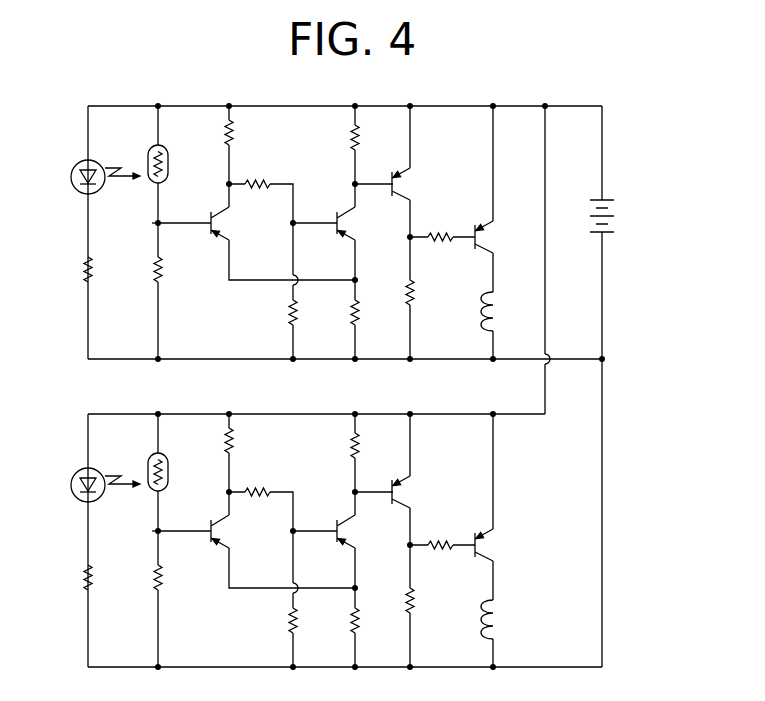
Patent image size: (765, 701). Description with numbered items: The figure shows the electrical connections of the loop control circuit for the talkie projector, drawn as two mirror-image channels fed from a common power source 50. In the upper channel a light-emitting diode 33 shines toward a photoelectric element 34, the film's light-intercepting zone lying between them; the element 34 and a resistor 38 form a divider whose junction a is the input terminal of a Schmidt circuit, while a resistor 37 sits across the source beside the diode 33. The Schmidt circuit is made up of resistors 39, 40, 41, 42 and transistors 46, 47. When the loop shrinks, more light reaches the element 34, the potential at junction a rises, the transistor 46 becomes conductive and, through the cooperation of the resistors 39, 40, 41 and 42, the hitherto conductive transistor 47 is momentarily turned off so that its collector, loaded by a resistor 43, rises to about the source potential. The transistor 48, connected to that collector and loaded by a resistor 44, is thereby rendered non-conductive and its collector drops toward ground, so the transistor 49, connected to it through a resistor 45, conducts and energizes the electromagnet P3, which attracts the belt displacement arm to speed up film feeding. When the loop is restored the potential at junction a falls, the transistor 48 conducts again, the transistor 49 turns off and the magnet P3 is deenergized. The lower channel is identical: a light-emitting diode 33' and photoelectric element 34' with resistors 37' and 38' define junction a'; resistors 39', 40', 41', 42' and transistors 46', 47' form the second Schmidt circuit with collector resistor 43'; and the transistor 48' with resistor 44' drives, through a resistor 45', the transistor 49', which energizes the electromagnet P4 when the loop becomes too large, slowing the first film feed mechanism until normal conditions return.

The light-emitting diode 33 is at (92, 158).
The photoelectric element 34 is at (173, 148).
The resistor 37 is at (58, 268).
The resistor 38 is at (184, 268).
The resistor 39 is at (254, 129).
The resistor 40 is at (271, 163).
The resistor 41 is at (267, 312).
The resistor 42 is at (332, 312).
The resistor 43 is at (329, 132).
The resistor 44 is at (435, 291).
The resistor 45 is at (456, 215).
The transistor 46 is at (245, 223).
The transistor 47 is at (371, 223).
The transistor 48 is at (424, 182).
The transistor 49 is at (504, 237).
The electromagnet P3 is at (486, 318).
The power source 50 is at (615, 210).
The junction a is at (140, 222).
The light-emitting diode 33' is at (90, 466).
The photoelectric element 34' is at (177, 456).
The resistor 37' is at (57, 576).
The resistor 38' is at (187, 576).
The resistor 39' is at (257, 437).
The resistor 40' is at (274, 471).
The resistor 41' is at (265, 620).
The resistor 42' is at (331, 620).
The resistor 43' is at (327, 440).
The resistor 44' is at (438, 611).
The resistor 45' is at (453, 565).
The transistor 46' is at (248, 531).
The transistor 47' is at (374, 531).
The transistor 48' is at (428, 490).
The transistor 49' is at (510, 540).
The electromagnet P4 is at (518, 619).
The junction a' is at (139, 530).